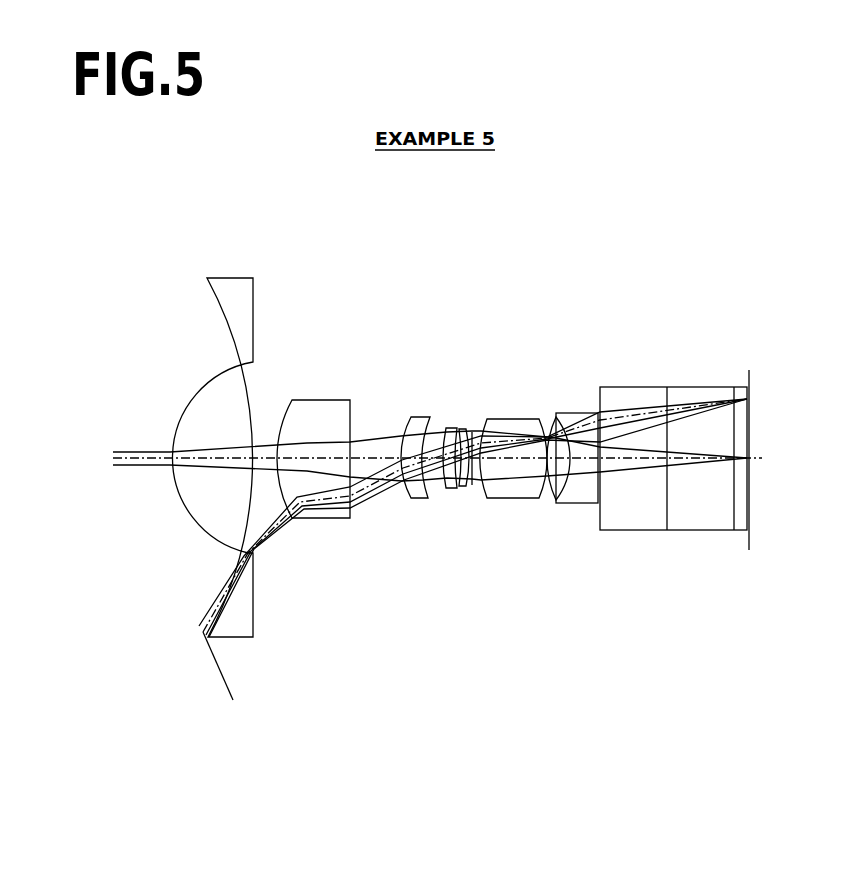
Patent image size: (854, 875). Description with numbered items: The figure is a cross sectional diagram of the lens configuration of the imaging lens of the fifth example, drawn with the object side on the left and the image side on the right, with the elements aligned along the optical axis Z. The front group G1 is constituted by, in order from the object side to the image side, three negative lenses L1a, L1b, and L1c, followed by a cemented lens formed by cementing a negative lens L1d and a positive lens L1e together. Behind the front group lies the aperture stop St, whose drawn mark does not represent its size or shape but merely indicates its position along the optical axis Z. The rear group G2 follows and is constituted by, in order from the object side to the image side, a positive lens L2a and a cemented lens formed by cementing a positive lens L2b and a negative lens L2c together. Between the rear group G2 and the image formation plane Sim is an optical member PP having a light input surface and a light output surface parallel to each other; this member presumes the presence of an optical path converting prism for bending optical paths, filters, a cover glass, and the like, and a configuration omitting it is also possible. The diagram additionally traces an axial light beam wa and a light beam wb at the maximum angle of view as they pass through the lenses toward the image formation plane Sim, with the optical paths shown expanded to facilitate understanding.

The negative lens L1a is at (231, 287).
The negative lens L1b is at (323, 407).
The negative lens L1c is at (417, 423).
The negative lens L1d is at (450, 428).
The positive lens L1e is at (463, 428).
The positive lens L2a is at (507, 420).
The positive lens L2b is at (557, 417).
The negative lens L2c is at (575, 420).
The front group G1 is at (472, 201).
The rear group G2 is at (637, 201).
The aperture stop St is at (478, 486).
The optical member PP is at (745, 350).
The image formation plane Sim is at (749, 540).
The optical axis Z is at (133, 455).
The axial light beam wa is at (108, 433).
The light beam at a maximum angle of view wb is at (255, 704).